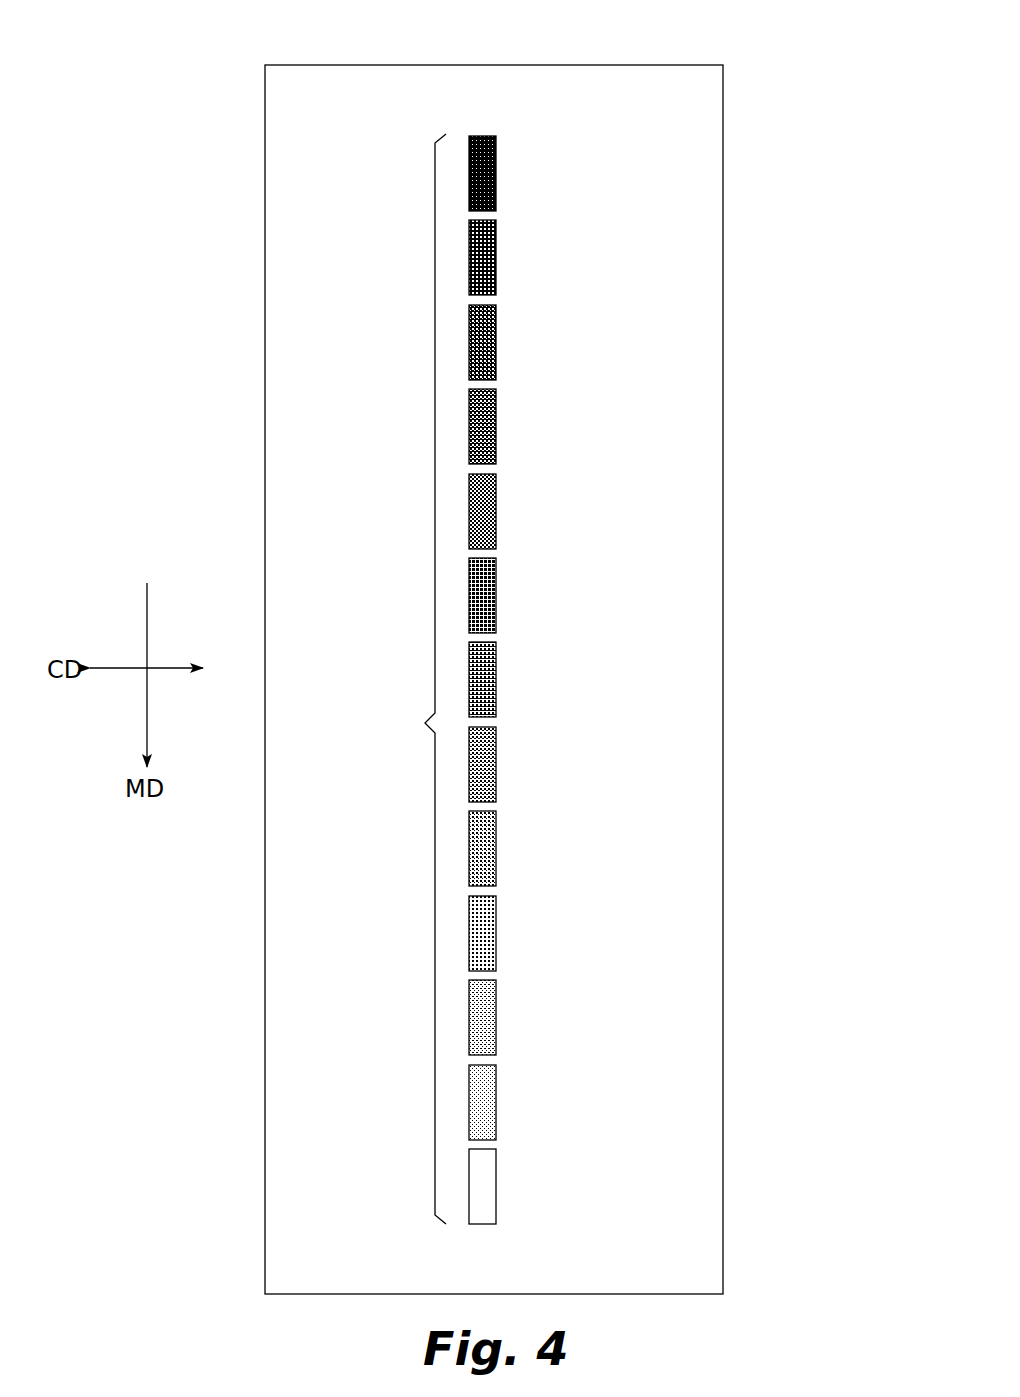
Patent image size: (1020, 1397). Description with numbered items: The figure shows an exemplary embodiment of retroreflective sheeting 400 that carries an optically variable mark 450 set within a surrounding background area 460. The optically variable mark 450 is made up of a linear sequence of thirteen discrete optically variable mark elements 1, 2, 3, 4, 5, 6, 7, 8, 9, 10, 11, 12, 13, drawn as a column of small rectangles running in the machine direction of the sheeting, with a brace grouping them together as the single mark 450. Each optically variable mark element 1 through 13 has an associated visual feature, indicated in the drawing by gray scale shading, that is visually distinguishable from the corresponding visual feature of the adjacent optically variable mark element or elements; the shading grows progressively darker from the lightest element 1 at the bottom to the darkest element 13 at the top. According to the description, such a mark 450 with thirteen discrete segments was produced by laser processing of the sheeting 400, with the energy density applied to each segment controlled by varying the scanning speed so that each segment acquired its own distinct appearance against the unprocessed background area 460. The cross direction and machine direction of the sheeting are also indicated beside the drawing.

The retroreflective sheeting 400 is at (727, 48).
The background area 460 is at (709, 615).
The optically variable mark 450 is at (472, 679).
The optically variable mark element 13 is at (497, 177).
The optically variable mark element 12 is at (497, 261).
The optically variable mark element 11 is at (497, 346).
The optically variable mark element 10 is at (497, 430).
The optically variable mark element 9 is at (497, 515).
The optically variable mark element 8 is at (497, 599).
The optically variable mark element 7 is at (497, 683).
The optically variable mark element 6 is at (497, 768).
The optically variable mark element 5 is at (497, 852).
The optically variable mark element 4 is at (497, 937).
The optically variable mark element 3 is at (497, 1021).
The optically variable mark element 2 is at (497, 1106).
The optically variable mark element 1 is at (497, 1190).